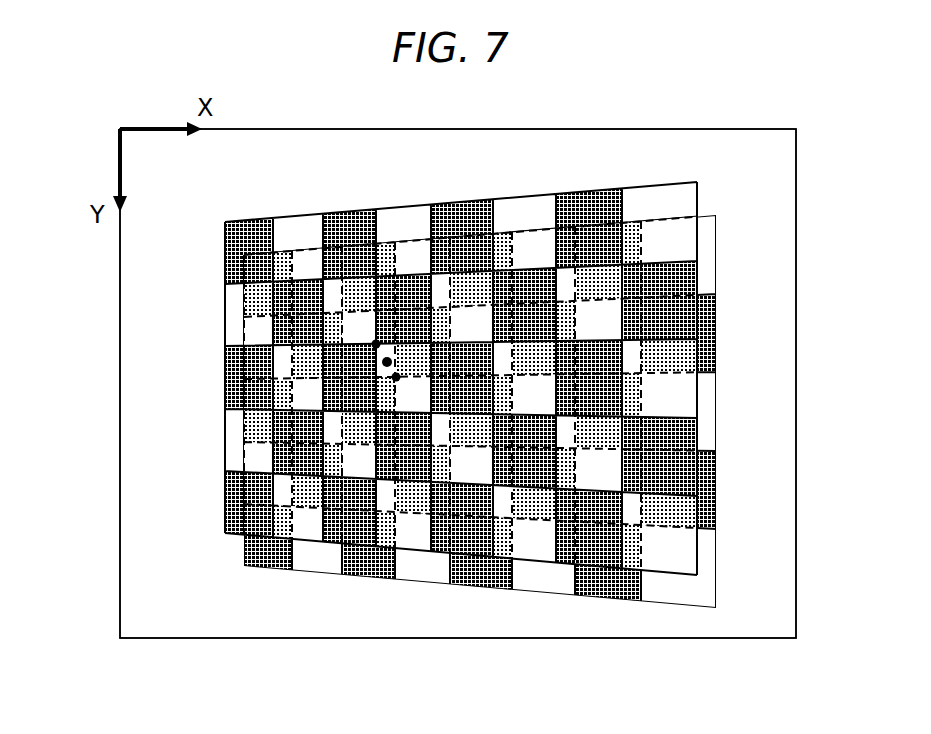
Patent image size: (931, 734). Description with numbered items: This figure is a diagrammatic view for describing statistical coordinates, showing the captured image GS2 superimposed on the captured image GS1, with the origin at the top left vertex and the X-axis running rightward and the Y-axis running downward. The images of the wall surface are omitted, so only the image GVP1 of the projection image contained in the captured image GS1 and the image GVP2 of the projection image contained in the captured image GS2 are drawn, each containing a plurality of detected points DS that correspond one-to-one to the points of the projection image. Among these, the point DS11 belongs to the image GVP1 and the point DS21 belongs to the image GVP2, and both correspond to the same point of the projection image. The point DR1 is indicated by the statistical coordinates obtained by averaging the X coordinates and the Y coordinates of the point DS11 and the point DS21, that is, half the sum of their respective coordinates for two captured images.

The captured image GS1 is at (120, 481).
The captured image GS2 is at (410, 383).
The image GVP2 is at (528, 197).
The image GVP1 is at (548, 590).
The point DS21 is at (377, 344).
The point DS11 is at (396, 377).
The point DR1 is at (383, 362).
The points DS is at (569, 476).